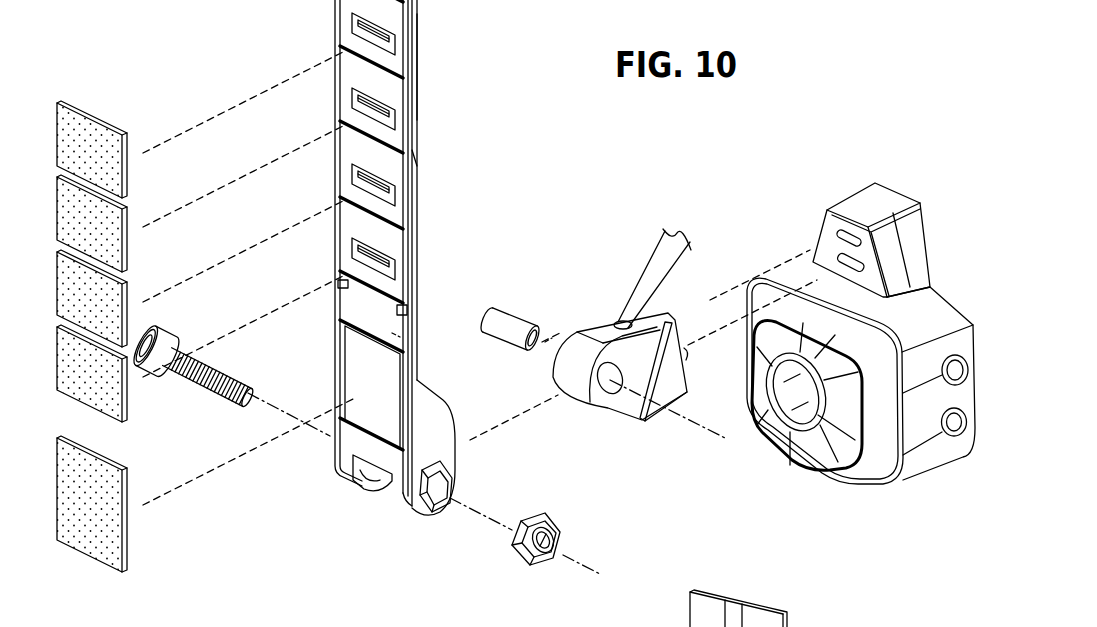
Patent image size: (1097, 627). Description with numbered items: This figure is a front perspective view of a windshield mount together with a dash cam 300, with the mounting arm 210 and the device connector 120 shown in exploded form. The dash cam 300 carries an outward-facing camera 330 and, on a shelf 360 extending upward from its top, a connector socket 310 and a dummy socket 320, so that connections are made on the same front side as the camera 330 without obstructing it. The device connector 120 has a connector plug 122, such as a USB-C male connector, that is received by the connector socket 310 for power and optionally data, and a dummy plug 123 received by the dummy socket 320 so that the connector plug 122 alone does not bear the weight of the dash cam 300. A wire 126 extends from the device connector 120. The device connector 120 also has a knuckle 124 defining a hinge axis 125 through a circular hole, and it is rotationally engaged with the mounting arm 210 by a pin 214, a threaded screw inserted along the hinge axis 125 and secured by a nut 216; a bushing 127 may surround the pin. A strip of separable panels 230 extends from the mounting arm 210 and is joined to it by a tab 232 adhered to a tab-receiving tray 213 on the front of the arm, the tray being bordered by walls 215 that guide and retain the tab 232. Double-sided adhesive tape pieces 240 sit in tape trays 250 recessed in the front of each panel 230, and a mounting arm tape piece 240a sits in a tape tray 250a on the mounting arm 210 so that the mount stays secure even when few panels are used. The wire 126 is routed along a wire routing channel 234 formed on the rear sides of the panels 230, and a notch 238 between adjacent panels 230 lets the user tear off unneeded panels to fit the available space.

The device connector 120 is at (643, 405).
The connector plug 122 is at (680, 335).
The dummy plug 123 is at (688, 355).
The knuckle 124 is at (593, 400).
The hinge axis 125 is at (545, 342).
The wire 126 is at (645, 272).
The sleeve 127 is at (510, 318).
The mounting arm 210 is at (315, 472).
The tab-receiving tray 213 is at (392, 333).
The pin 214 is at (197, 387).
The walls 215 is at (412, 306).
The nut 216 is at (523, 555).
The strip of separable panels 230 is at (412, 115).
The tab 232 is at (350, 303).
The wire routing channel 234 is at (737, 617).
The notch 238 is at (417, 158).
The double-sided adhesive tape pieces 240 is at (107, 222).
The mounting arm tape piece 240a is at (107, 542).
The tape tray 250 is at (345, 78).
The tape tray 250a is at (350, 350).
The dash cam 300 is at (907, 494).
The connector socket 310 is at (832, 232).
The dummy socket 320 is at (838, 253).
The camera 330 is at (792, 403).
The shelf 360 is at (885, 198).